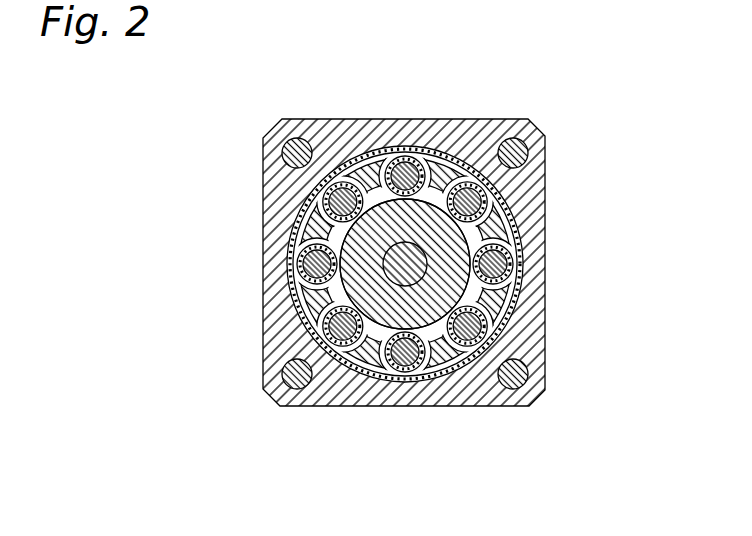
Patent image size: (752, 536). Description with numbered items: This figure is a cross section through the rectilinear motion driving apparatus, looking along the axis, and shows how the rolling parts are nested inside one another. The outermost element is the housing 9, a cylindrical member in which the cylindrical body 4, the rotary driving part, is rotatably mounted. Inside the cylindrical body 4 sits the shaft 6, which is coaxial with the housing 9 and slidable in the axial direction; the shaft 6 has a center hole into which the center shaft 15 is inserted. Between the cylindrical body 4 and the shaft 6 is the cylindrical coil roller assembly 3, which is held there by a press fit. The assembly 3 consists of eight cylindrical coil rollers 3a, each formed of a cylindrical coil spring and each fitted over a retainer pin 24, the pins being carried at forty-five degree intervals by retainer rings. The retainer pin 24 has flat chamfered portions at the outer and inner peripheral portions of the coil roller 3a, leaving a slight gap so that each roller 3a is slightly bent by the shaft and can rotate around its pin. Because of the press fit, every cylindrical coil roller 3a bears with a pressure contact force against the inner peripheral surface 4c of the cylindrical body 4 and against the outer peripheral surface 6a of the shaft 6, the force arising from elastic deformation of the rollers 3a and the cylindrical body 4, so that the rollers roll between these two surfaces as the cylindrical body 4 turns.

The cylindrical coil roller assembly 3 is at (445, 172).
The cylindrical coil roller 3a is at (522, 272).
The cylindrical body 4 is at (527, 250).
The inner peripheral surface 4c is at (381, 368).
The shaft 6 is at (450, 288).
The outer peripheral surface 6a is at (345, 293).
The housing 9 is at (548, 212).
The center shaft 15 is at (398, 260).
The retainer pin 24 is at (518, 258).